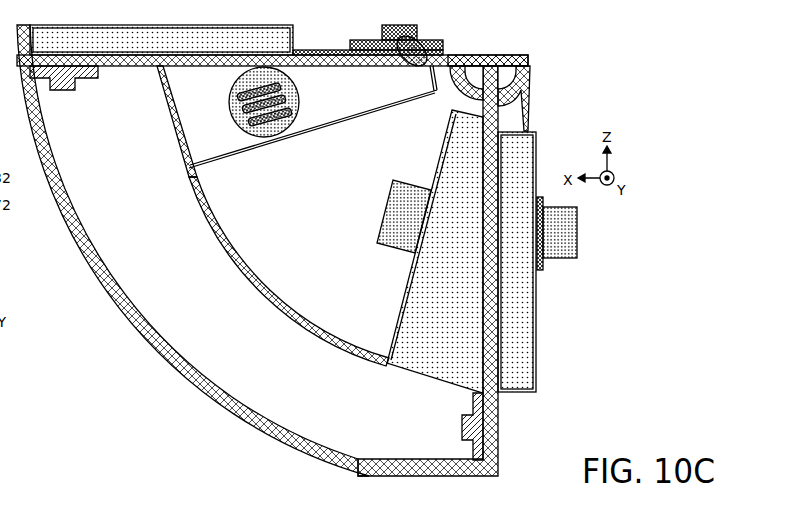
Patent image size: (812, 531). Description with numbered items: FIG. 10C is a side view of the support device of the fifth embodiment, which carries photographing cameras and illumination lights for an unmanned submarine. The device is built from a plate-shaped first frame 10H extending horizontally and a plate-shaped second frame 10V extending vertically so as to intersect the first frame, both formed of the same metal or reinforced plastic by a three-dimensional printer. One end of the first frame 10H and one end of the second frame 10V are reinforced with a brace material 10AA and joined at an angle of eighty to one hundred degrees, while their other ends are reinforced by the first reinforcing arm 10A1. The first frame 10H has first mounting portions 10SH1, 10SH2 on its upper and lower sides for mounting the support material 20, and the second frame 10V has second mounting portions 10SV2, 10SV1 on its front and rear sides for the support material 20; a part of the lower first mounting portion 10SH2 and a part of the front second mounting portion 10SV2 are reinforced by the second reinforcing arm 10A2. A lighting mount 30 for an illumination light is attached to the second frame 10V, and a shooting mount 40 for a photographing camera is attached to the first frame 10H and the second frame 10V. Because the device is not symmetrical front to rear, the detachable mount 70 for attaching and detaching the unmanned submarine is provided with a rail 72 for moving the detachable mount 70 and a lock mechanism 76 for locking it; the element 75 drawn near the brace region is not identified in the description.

The first reinforcing arm 10A1 is at (216, 399).
The second reinforcing arm 10A2 is at (335, 354).
The brace material 10AA is at (458, 97).
The first frame 10H is at (140, 55).
The upper first mounting portion 10SH1 is at (84, 25).
The lower first mounting portion 10SH2 is at (180, 139).
The rear second mounting portion 10SV1 is at (540, 368).
The front second mounting portion 10SV2 is at (404, 296).
The second frame 10V is at (495, 425).
The support material 20 is at (213, 38).
The lighting mount 30 is at (265, 143).
The shooting mount 40 is at (65, 91).
The detachable mount 70 is at (390, 38).
The rail 72 is at (332, 50).
The cover 75 is at (487, 52).
The lock mechanism 76 is at (404, 37).